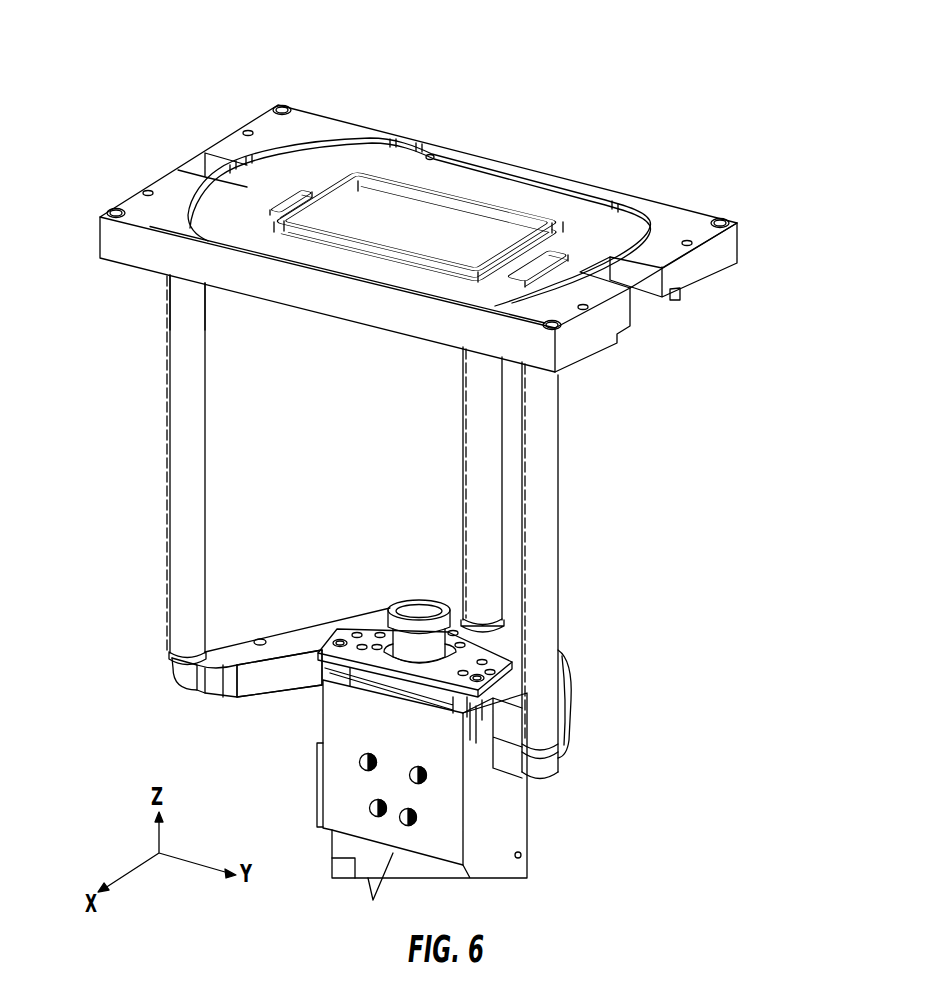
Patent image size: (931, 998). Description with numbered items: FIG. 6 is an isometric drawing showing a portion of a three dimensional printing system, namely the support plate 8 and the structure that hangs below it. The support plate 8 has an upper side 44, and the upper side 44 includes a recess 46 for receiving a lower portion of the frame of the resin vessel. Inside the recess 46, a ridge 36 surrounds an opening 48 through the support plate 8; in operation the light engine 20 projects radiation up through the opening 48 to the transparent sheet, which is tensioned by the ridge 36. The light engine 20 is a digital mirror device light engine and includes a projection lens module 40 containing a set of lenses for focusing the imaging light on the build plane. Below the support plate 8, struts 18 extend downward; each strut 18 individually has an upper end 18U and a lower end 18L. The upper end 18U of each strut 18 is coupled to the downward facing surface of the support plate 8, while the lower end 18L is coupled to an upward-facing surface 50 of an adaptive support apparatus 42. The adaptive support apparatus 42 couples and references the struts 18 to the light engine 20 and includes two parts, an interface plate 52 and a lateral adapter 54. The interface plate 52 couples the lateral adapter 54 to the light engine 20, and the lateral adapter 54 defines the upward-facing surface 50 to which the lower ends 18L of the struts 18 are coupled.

The support plate 8 is at (727, 247).
The upper side 44 is at (678, 220).
The recess 46 is at (531, 203).
The ridge 36 is at (458, 195).
The opening 48 is at (371, 230).
The struts 18 is at (178, 412).
The upper end 18U is at (175, 283).
The lower end 18L is at (178, 647).
The upward-facing surface 50 is at (293, 632).
The lateral adapter 54 is at (253, 685).
The interface plate 52 is at (373, 640).
The projection lens module 40 is at (435, 640).
The adaptive support apparatus 42 is at (585, 717).
The light engine 20 is at (573, 826).